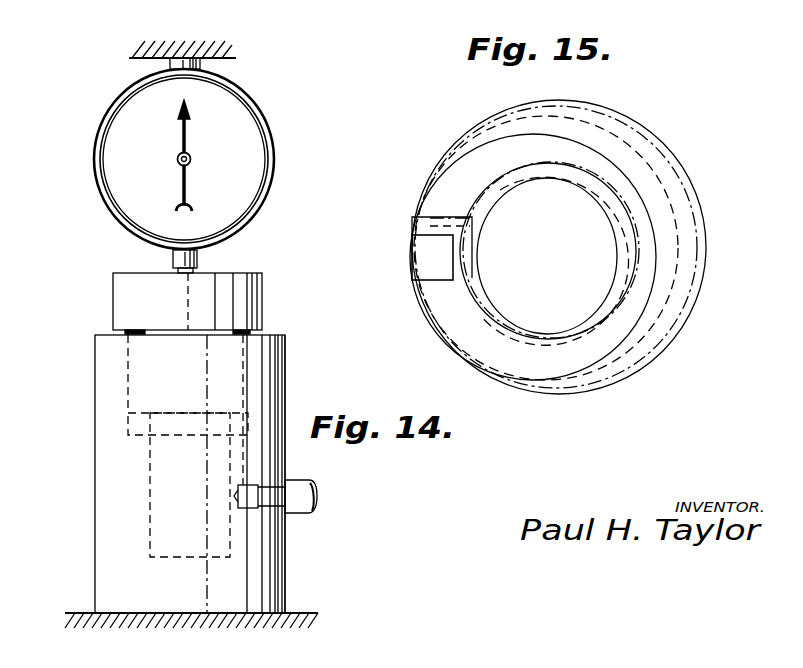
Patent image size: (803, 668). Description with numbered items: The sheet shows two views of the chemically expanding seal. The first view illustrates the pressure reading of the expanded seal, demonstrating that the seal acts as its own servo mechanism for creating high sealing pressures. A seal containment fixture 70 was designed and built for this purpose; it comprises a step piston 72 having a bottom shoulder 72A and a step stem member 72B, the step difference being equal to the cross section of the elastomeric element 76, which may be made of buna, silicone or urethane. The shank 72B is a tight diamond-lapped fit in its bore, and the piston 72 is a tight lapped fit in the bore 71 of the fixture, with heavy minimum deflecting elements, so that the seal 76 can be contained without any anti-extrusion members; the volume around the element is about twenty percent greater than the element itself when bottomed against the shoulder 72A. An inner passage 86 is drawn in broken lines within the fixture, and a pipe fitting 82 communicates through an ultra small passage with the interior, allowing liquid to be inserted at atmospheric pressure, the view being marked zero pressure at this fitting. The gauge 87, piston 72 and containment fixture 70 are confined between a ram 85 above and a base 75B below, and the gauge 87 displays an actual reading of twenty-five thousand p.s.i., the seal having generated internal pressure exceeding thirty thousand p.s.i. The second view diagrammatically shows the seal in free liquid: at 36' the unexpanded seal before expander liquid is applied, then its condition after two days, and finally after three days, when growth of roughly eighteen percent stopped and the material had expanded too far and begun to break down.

In FIG. 14, the ram 85 is at (209, 47).
In FIG. 14, the gauge 87 is at (108, 118).
In FIG. 14, the step piston 72 is at (112, 290).
In FIG. 14, the bottom shoulder 72A is at (135, 335).
In FIG. 14, the seal containment fixture 70 is at (297, 327).
In FIG. 14, the bore 71 is at (285, 396).
In FIG. 14, the elastomeric element 76 is at (128, 421).
In FIG. 14, the inner passage 86 is at (207, 456).
In FIG. 14, the step stem member 72B is at (150, 512).
In FIG. 14, the pipe fitting 82 is at (300, 482).
In FIG. 14, the base 75B is at (300, 612).
In FIG. 15, the seal condition prior to expander liquid 36' is at (592, 252).